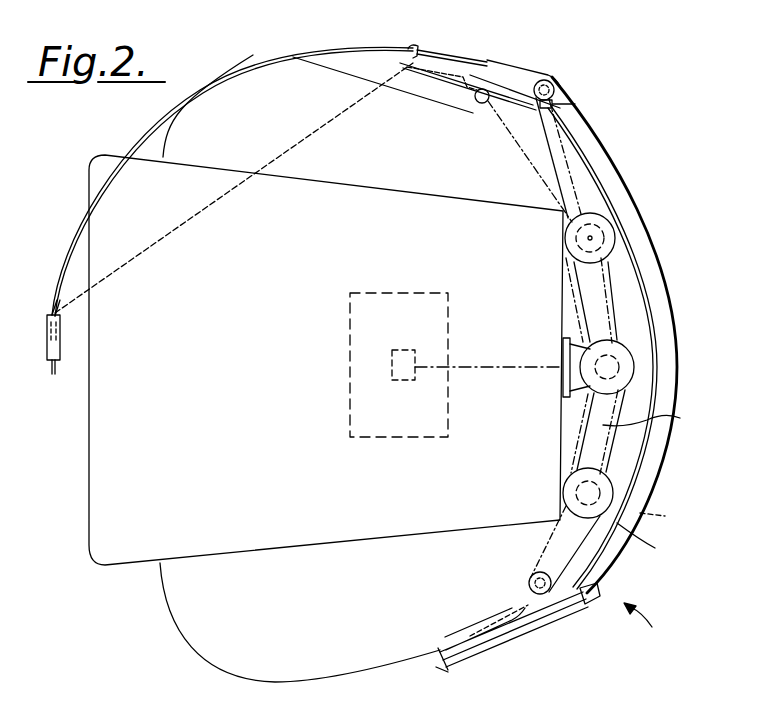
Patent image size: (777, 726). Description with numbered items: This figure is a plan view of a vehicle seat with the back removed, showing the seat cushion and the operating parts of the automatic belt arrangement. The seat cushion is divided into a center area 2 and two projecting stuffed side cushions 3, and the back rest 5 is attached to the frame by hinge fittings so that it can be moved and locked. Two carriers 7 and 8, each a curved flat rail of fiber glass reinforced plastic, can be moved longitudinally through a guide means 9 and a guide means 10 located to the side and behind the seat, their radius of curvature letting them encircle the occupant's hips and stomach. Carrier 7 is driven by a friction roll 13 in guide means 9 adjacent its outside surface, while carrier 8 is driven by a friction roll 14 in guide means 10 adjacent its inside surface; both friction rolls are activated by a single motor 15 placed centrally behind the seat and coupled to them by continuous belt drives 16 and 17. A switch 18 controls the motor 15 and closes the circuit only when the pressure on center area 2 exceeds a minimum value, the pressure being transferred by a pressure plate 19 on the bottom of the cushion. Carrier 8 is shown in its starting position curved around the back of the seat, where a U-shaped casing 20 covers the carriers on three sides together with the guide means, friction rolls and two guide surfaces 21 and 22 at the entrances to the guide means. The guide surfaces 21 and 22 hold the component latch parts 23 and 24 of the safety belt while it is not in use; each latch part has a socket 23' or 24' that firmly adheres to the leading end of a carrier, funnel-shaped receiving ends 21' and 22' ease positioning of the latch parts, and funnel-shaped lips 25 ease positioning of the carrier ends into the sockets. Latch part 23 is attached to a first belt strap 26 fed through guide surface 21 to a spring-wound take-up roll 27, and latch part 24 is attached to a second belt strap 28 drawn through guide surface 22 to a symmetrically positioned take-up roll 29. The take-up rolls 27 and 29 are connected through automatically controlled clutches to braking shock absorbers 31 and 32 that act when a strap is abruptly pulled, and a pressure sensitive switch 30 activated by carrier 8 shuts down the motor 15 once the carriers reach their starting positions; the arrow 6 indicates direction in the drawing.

The center area 2 is at (100, 474).
The projecting stuffed side cushions 3 is at (246, 100).
The back rest 5 is at (230, 652).
The direction arrow 6 is at (647, 624).
The carrier 7 is at (360, 47).
The carrier 8 is at (640, 467).
The guide means 9 is at (513, 62).
The guide means 10 is at (553, 598).
The friction roll 13 is at (568, 70).
The friction roll 14 is at (533, 573).
The motor 15 is at (635, 367).
The continuous belt drive 16 is at (643, 295).
The continuous belt drive 17 is at (659, 419).
The switch 18 is at (392, 370).
The pressure plate 19 is at (363, 335).
The U-shaped casing 20 is at (665, 525).
The guide surface 21 is at (480, 58).
The funnel-shaped receiving end 21' is at (408, 32).
The guide surface 22 is at (513, 634).
The funnel-shaped receiving end 22' is at (460, 690).
The component latch part 23 is at (43, 359).
The socket 23' is at (92, 334).
The component latch part 24 is at (458, 621).
The socket 24' is at (486, 605).
The funnel-shaped lips 25 is at (50, 313).
The first belt strap 26 is at (180, 232).
The take-up roll 27 is at (622, 227).
The second belt strap 28 is at (562, 548).
The take-up roll 29 is at (562, 492).
The pressure sensitive switch 30 is at (486, 106).
The braking shock absorber 31 is at (617, 203).
The braking shock absorber 32 is at (643, 551).